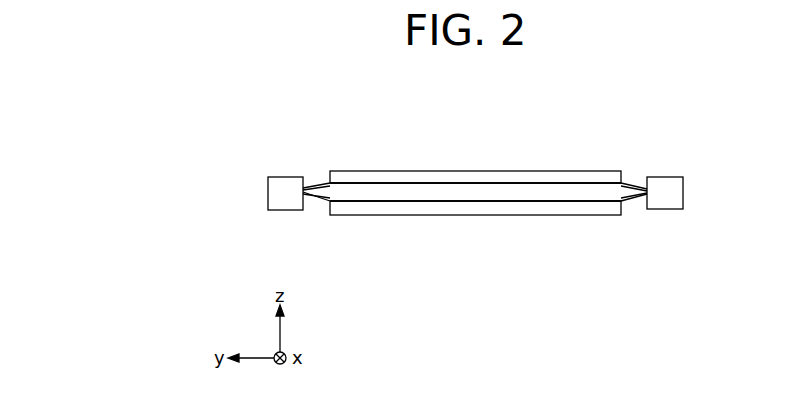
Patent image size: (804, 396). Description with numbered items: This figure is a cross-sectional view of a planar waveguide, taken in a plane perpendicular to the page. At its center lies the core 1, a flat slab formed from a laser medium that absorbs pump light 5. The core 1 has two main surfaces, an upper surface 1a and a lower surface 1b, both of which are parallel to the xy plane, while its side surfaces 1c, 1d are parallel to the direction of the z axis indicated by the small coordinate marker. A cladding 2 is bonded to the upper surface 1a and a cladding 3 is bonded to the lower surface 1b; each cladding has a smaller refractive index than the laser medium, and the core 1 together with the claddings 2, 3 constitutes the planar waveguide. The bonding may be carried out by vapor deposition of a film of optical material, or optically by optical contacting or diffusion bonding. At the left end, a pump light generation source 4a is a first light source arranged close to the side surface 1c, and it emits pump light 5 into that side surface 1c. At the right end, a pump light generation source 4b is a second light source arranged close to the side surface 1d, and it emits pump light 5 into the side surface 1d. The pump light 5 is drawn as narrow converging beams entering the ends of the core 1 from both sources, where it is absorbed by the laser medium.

The core 1 is at (477, 192).
The upper surface 1a is at (545, 176).
The lower surface 1b is at (525, 203).
The side surface 1c is at (322, 198).
The side surface 1d is at (627, 203).
The cladding 2 is at (413, 176).
The cladding 3 is at (434, 213).
The pump light generation source 4a is at (283, 176).
The pump light generation source 4b is at (672, 176).
The pump light 5 is at (318, 182).